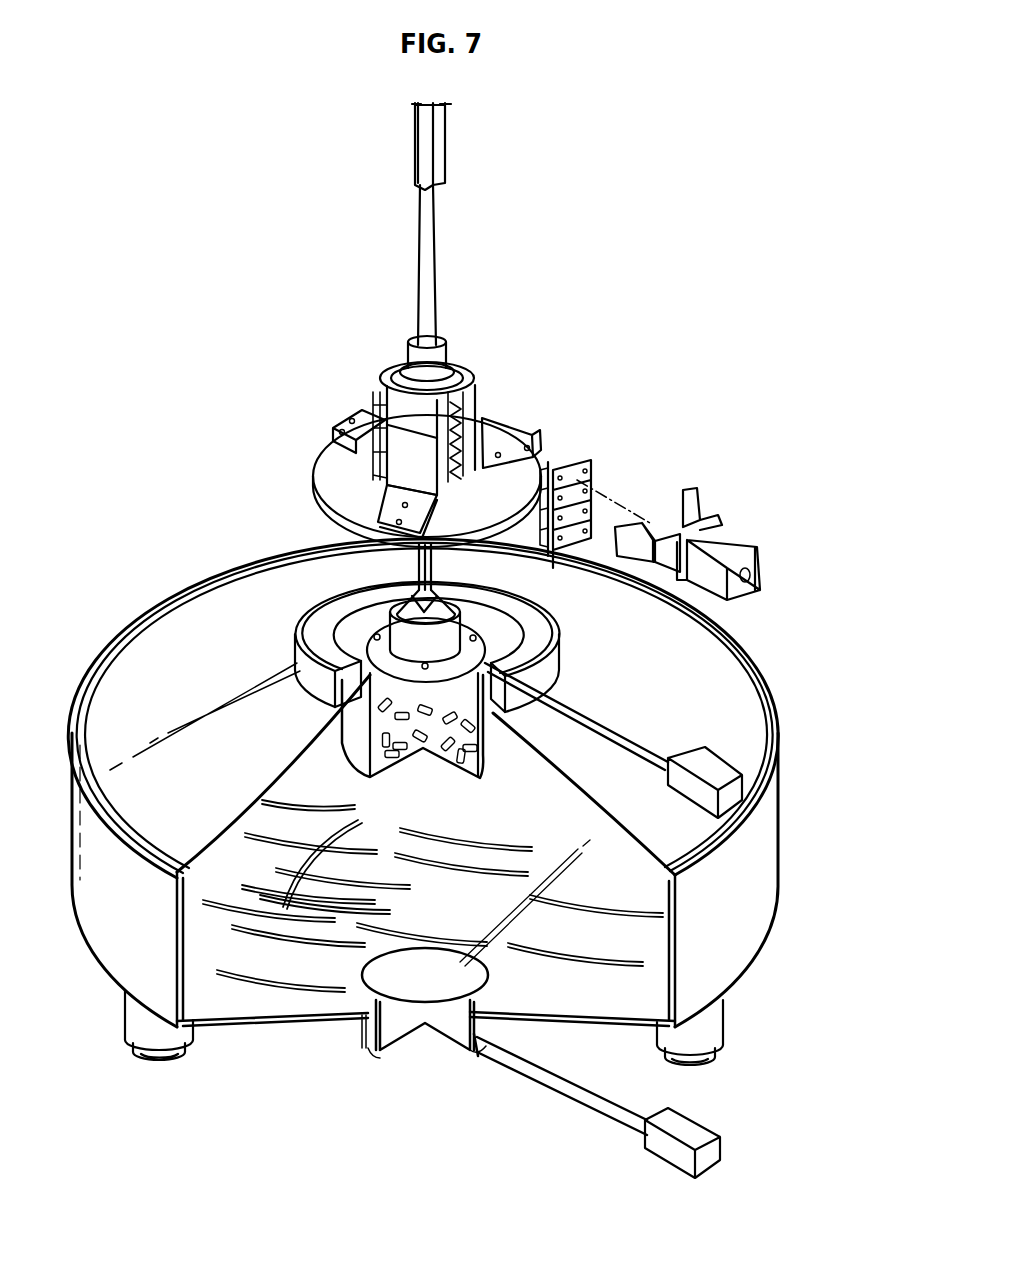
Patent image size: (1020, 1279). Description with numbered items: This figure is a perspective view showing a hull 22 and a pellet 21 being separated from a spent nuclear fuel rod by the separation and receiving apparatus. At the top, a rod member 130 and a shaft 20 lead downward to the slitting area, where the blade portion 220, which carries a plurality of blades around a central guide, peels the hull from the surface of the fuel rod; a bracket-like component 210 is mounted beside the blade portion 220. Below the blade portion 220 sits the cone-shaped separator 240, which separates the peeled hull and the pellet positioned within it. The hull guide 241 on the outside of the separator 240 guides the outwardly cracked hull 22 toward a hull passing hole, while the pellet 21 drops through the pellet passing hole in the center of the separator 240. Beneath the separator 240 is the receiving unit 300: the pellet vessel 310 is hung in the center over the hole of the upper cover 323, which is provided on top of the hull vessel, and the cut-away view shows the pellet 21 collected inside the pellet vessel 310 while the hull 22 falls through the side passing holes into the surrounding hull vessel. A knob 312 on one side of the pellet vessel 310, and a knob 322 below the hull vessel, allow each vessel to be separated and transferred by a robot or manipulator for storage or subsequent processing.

The shaft coupling cap 130 is at (447, 150).
The rotating shaft 20 is at (432, 258).
The blade portion 220 is at (367, 364).
The sensor unit 210 is at (573, 453).
The separator 240 is at (387, 583).
The hull guide 241 is at (413, 618).
The upper cover 323 is at (170, 640).
The pellet vessel 310 is at (492, 732).
The knob 312 is at (712, 762).
The receiving unit 300 is at (103, 987).
The hull 22 is at (318, 990).
The pellet 21 is at (465, 752).
The knob 322 is at (688, 1128).